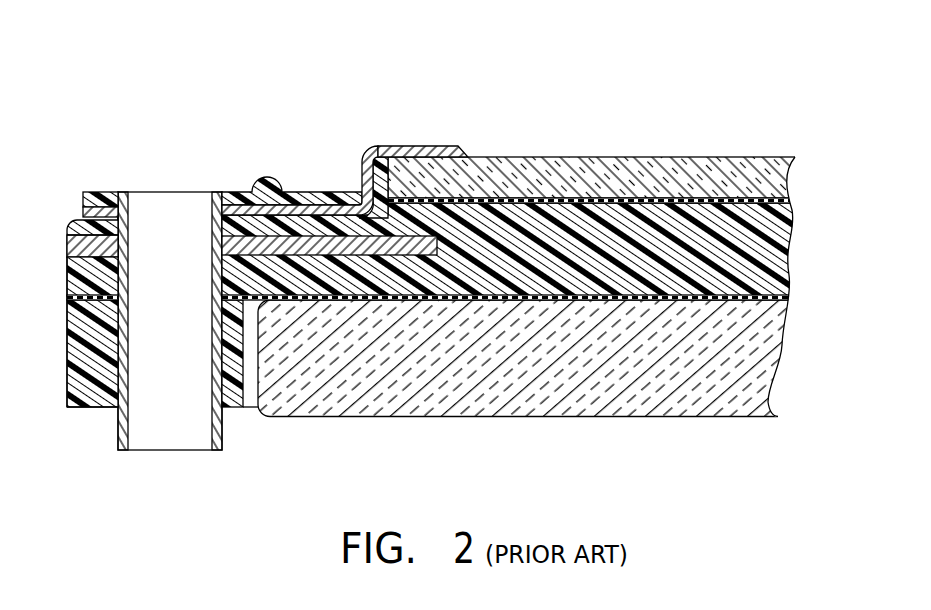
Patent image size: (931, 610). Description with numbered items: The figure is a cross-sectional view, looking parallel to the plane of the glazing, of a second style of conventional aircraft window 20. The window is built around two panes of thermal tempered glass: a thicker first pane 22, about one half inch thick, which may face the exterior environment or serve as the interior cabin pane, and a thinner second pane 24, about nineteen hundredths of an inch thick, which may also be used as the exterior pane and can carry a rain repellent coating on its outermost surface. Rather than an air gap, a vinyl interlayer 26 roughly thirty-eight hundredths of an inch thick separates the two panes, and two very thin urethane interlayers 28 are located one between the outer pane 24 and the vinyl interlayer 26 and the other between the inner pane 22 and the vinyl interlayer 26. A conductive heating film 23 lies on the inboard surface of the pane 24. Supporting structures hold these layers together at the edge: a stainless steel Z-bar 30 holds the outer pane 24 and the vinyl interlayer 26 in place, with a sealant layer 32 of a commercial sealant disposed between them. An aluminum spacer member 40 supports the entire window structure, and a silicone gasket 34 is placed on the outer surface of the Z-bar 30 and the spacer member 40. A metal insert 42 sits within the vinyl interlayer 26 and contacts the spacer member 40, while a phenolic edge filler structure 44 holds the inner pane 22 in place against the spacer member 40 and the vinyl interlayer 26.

The aircraft window 20 is at (692, 72).
The first pane 22 is at (461, 374).
The conductive heating film 23 is at (683, 198).
The second pane 24 is at (592, 172).
The vinyl interlayer 26 is at (572, 264).
The urethane interlayers 28 is at (748, 208).
The Z-bar 30 is at (410, 146).
The sealant layer 32 is at (366, 166).
The silicone gasket 34 is at (266, 180).
The aluminum spacer member 40 is at (148, 452).
The metal insert 42 is at (72, 240).
The edge filler structure 44 is at (80, 392).